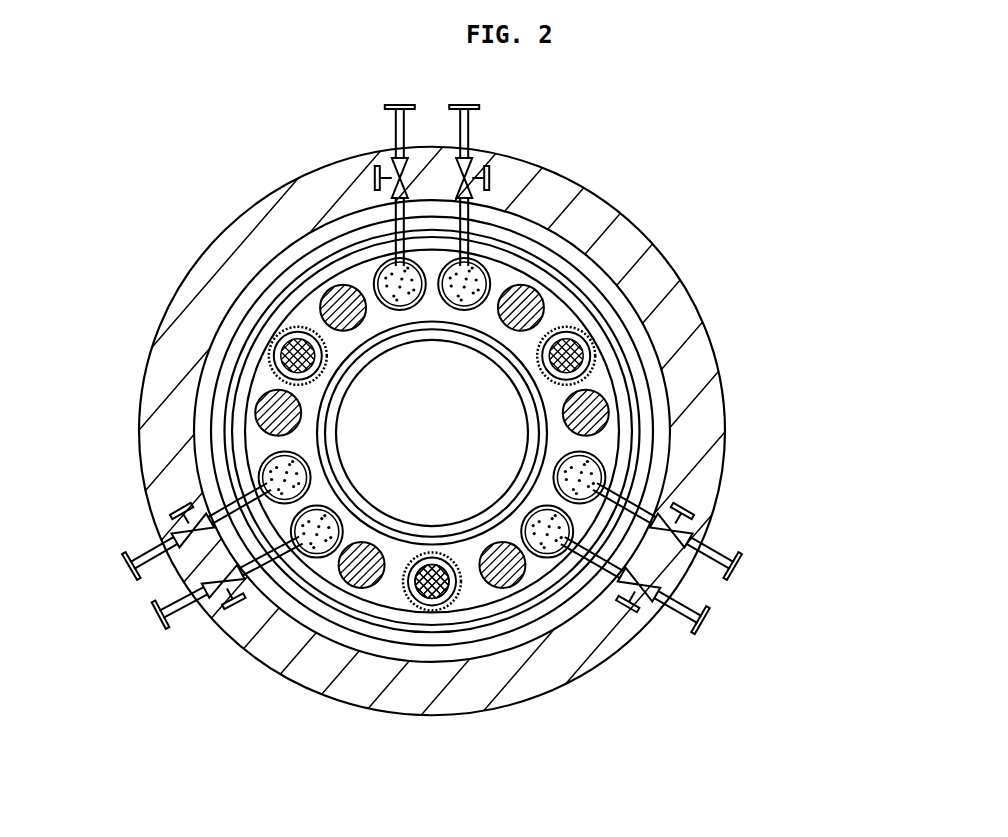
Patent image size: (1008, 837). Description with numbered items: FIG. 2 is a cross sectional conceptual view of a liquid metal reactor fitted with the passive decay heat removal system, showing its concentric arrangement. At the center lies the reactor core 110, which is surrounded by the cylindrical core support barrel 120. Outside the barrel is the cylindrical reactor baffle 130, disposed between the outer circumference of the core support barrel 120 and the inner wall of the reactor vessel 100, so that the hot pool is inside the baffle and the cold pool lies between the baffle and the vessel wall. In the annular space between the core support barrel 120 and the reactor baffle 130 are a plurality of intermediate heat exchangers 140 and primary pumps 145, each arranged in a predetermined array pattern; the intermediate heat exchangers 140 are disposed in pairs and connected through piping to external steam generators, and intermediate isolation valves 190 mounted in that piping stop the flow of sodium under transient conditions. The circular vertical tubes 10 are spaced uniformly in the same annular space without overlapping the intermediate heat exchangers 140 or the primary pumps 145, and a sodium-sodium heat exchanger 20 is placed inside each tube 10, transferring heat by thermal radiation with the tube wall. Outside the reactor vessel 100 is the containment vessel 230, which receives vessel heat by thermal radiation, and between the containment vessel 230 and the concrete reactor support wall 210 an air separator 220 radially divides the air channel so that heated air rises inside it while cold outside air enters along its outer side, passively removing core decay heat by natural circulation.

The circular vertical tube 10 is at (404, 606).
The sodium-sodium heat exchanger 20 is at (444, 595).
The reactor vessel 100 is at (297, 273).
The reactor core 110 is at (455, 440).
The core support barrel 120 is at (508, 337).
The reactor baffle 130 is at (241, 412).
The intermediate heat exchanger 140 is at (272, 496).
The primary pump 145 is at (517, 582).
The intermediate isolation valve 190 is at (688, 550).
The reactor support wall 210 is at (690, 388).
The air separator 220 is at (658, 432).
The containment vessel 230 is at (633, 486).